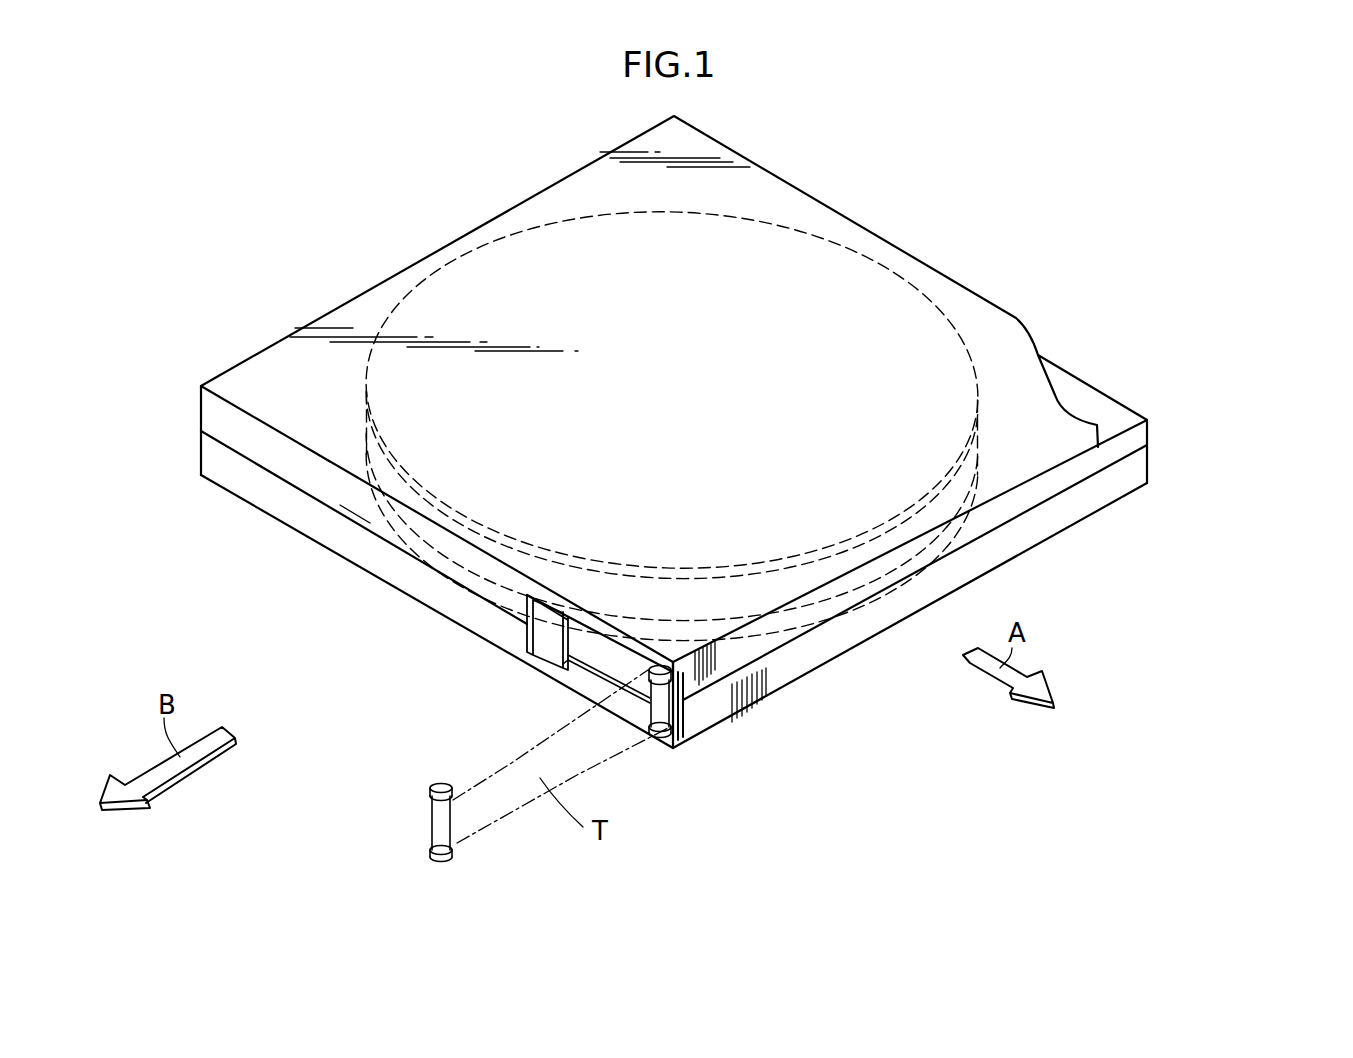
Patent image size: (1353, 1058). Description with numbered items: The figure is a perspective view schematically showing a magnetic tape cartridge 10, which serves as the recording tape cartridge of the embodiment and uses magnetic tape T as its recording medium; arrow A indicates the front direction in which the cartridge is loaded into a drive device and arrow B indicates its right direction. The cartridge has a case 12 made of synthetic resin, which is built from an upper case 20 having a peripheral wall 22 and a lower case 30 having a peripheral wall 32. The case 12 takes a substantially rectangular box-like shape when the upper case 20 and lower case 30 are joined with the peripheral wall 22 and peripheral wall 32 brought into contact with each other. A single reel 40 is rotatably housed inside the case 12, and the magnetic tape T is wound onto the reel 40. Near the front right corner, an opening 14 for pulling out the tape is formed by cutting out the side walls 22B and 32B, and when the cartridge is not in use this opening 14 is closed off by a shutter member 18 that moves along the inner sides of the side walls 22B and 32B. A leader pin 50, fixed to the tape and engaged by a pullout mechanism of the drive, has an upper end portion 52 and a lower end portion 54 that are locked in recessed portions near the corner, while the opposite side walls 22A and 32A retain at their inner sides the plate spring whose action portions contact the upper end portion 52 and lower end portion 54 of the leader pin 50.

The magnetic tape cartridge 10 is at (978, 184).
The case 12 is at (1244, 398).
The opening 14 is at (573, 677).
The shutter member 18 is at (527, 655).
The upper case 20 is at (1163, 432).
The peripheral wall 22 is at (206, 410).
The side wall 22A is at (1018, 492).
The side wall 22B is at (332, 485).
The lower case 30 is at (1163, 474).
The peripheral wall 32 is at (206, 456).
The side wall 32A is at (1010, 540).
The side wall 32B is at (364, 548).
The reel 40 is at (500, 275).
The leader pin 50 is at (665, 713).
The upper end portion 52 is at (651, 668).
The lower end portion 54 is at (672, 740).